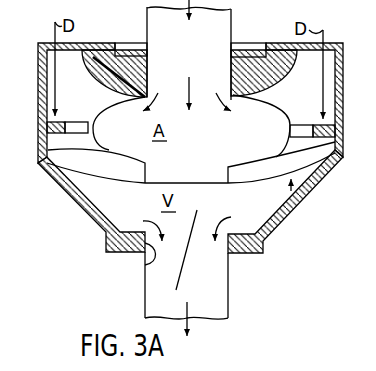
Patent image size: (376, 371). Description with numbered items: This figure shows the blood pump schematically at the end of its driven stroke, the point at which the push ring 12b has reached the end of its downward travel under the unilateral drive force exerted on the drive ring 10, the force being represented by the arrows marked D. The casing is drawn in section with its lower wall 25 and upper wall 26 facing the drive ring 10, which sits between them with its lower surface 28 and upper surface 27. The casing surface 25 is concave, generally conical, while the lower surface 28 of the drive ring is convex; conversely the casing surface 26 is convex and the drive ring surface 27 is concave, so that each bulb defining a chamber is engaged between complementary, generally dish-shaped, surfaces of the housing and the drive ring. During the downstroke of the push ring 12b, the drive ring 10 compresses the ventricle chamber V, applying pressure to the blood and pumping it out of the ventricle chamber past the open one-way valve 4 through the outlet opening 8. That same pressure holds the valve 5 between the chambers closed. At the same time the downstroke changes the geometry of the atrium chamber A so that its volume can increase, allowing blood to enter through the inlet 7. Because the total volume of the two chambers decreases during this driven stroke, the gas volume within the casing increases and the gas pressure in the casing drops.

The one-way valve 4 is at (184, 264).
The valve 5 is at (203, 181).
The inlet 7 is at (230, 68).
The outlet opening 8 is at (145, 265).
The drive ring 10 is at (295, 181).
The push ring 12b is at (287, 101).
The lower wall of the casing 25 is at (101, 211).
The upper wall of the casing 26 is at (103, 81).
The upper surface of the drive ring 27 is at (107, 146).
The lower surface of the drive ring 28 is at (94, 174).